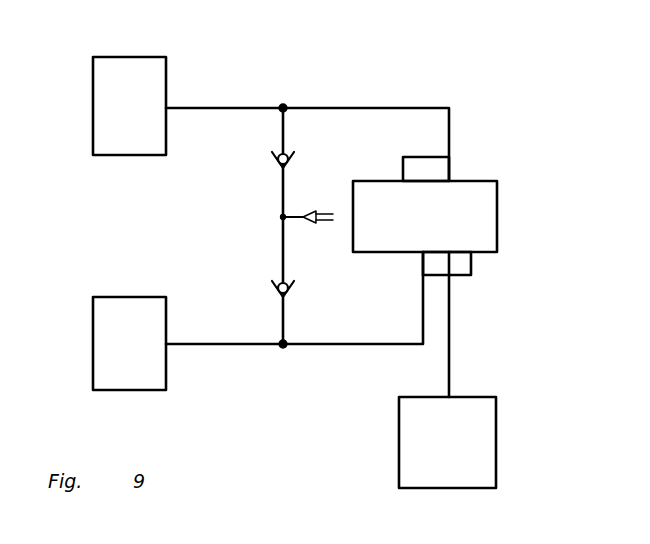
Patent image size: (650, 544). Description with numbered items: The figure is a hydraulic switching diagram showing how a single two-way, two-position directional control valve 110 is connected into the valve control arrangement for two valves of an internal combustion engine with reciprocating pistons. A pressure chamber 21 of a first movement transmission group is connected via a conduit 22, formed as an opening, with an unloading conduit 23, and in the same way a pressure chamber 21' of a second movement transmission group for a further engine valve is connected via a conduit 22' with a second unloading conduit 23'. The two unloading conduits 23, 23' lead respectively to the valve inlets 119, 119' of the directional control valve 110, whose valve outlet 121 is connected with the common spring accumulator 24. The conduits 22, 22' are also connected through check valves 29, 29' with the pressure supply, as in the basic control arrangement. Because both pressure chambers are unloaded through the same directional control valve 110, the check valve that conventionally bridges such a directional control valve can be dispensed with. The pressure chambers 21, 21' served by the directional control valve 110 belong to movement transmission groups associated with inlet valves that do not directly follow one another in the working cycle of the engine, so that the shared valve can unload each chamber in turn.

The pressure chamber 21 is at (129, 77).
The pressure chamber 21' is at (129, 371).
The conduit 22 is at (224, 76).
The conduit 22' is at (224, 378).
The unloading conduit 23 is at (366, 112).
The unloading conduit 23' is at (353, 345).
The check valve 29 is at (251, 178).
The check valve 29' is at (249, 299).
The 2/2 directional control valve 110 is at (480, 218).
The valve inlet 119 is at (463, 149).
The valve inlet 119' is at (389, 277).
The valve outlet 121 is at (450, 263).
The spring accumulator 24 is at (485, 433).